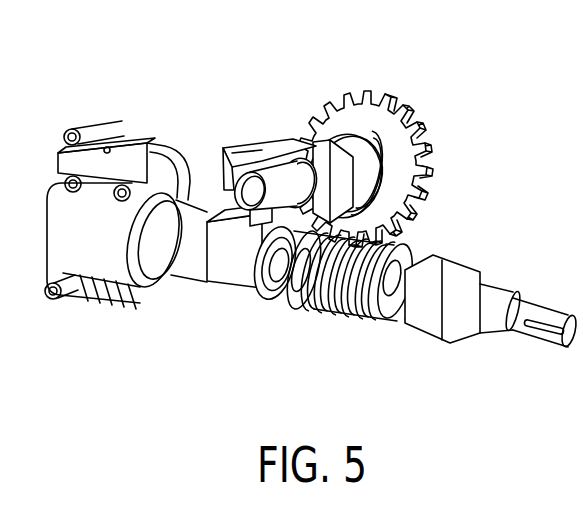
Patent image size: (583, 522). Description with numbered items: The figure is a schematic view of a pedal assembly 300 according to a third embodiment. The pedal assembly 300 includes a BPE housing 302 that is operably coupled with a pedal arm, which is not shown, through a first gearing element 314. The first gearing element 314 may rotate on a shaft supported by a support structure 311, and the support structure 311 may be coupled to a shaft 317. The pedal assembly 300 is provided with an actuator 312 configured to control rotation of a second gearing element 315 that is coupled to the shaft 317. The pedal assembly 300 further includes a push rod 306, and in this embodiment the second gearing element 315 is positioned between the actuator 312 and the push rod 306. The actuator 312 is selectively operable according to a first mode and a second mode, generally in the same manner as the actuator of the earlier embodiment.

The pedal assembly 300 is at (168, 101).
The BPE housing 302 is at (102, 270).
The push rod 306 is at (490, 325).
The support structure 311 is at (240, 150).
The actuator 312 is at (185, 260).
The first gearing element 314 is at (370, 96).
The second gearing element 315 is at (330, 310).
The shaft 317 is at (285, 273).